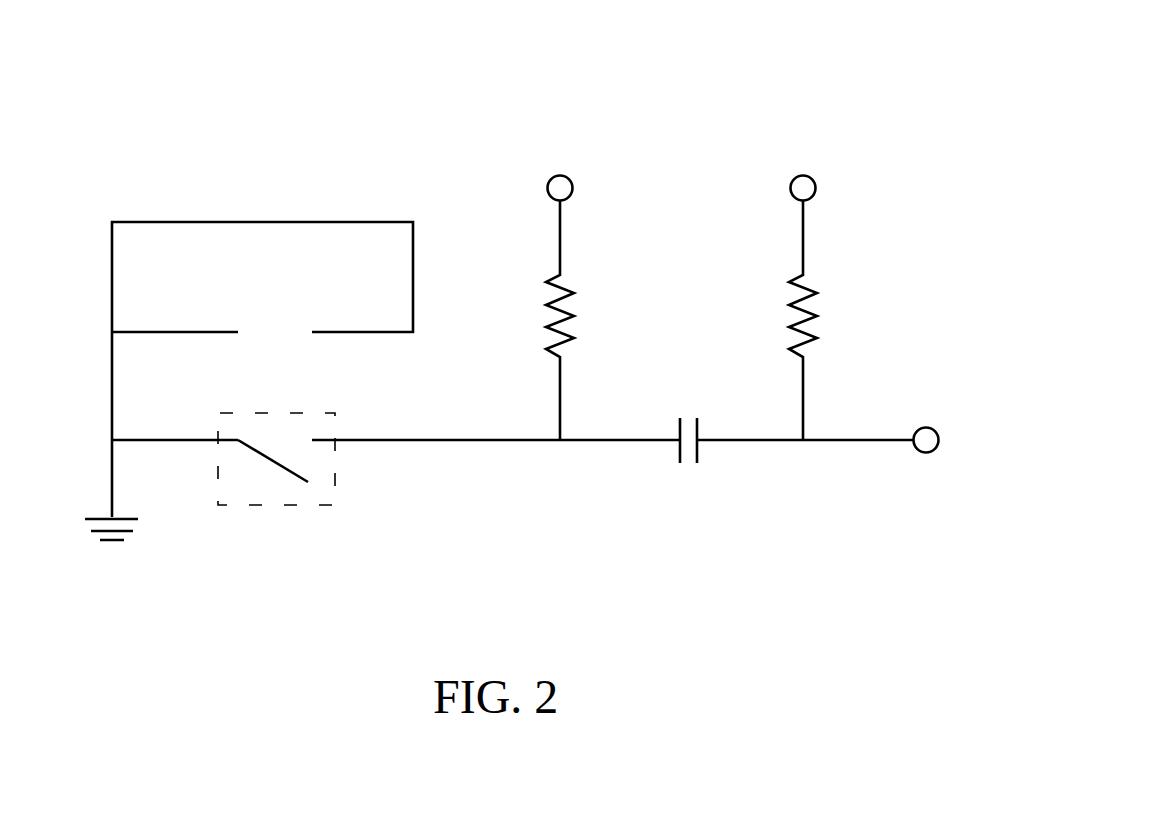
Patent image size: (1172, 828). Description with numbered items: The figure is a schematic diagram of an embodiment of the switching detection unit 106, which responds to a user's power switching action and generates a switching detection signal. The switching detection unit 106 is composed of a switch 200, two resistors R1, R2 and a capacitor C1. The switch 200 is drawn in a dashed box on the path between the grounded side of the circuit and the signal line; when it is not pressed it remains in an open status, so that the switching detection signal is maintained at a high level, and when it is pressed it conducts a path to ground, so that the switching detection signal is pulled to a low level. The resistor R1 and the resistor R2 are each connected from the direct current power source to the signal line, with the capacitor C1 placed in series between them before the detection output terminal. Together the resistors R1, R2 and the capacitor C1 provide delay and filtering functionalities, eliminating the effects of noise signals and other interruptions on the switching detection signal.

The switching detection unit 106 is at (986, 88).
The switch 200 is at (293, 507).
The resistor R1 is at (577, 291).
The resistor R2 is at (821, 291).
The capacitor C1 is at (686, 420).